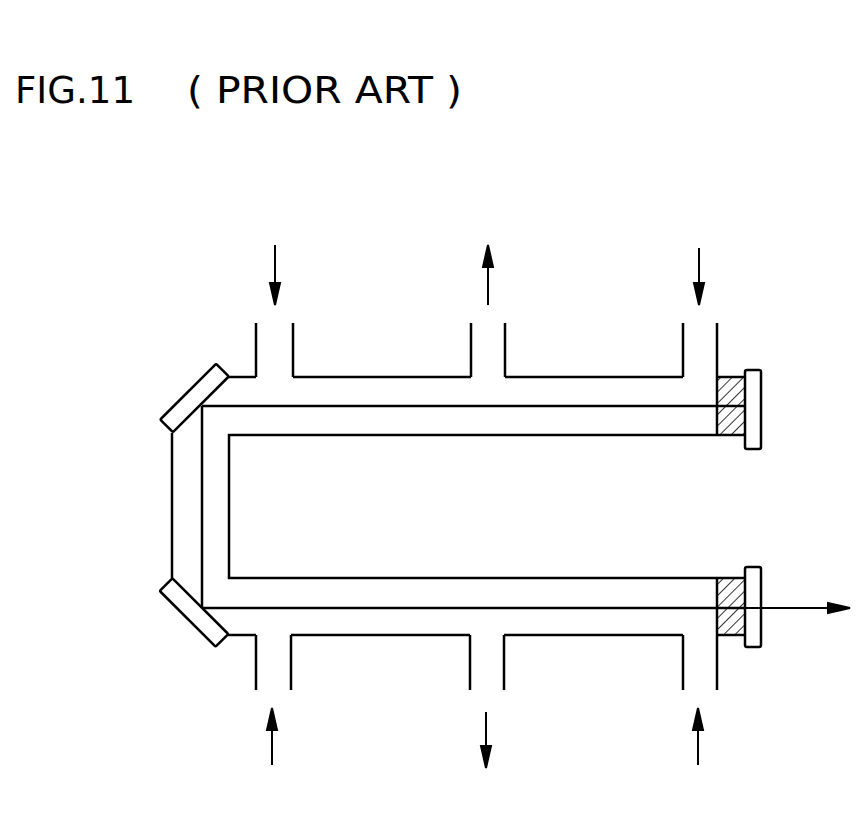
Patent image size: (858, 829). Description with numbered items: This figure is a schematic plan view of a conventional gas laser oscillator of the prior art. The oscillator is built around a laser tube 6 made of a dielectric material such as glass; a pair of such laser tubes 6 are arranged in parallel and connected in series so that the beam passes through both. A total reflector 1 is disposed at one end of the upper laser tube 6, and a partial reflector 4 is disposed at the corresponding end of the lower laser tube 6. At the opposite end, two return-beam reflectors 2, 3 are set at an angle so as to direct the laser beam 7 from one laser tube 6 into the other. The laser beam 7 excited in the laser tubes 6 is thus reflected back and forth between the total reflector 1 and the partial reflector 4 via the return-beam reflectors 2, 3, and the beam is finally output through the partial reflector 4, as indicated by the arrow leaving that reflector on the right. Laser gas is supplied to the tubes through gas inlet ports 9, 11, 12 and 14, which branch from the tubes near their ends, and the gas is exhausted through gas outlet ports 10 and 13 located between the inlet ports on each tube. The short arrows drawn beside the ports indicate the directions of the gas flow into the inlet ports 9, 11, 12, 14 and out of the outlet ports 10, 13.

The total reflector 1 is at (763, 400).
The return-beam reflector 2 is at (182, 400).
The return-beam reflector 3 is at (182, 617).
The partial reflector 4 is at (762, 625).
The laser tube 6 is at (552, 377).
The laser beam 7 is at (593, 406).
The gas inlet port 9 is at (294, 350).
The gas outlet port 10 is at (471, 355).
The gas inlet port 11 is at (683, 360).
The gas inlet port 12 is at (292, 657).
The gas outlet port 13 is at (505, 657).
The gas inlet port 14 is at (683, 657).